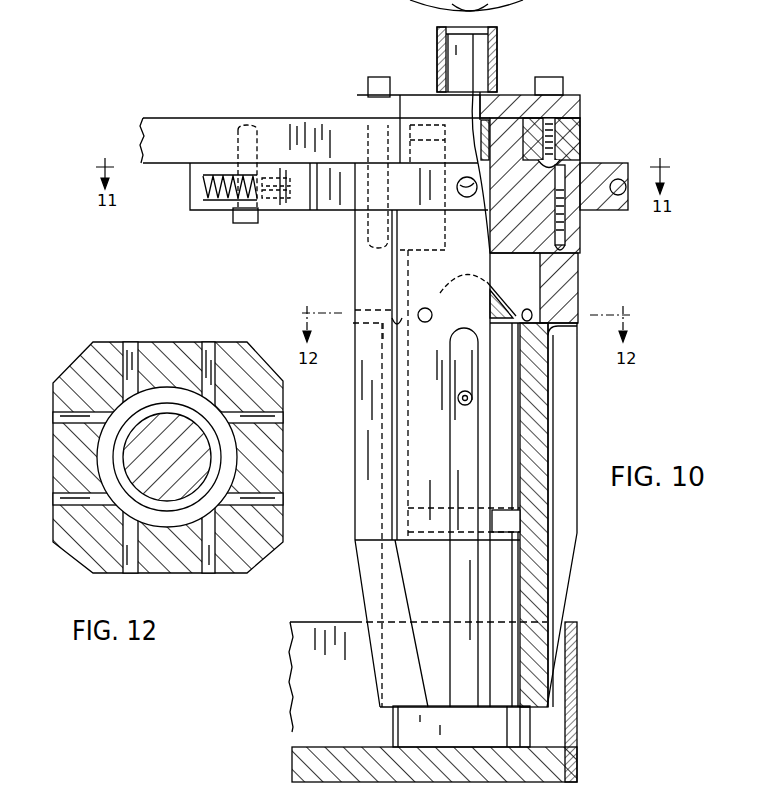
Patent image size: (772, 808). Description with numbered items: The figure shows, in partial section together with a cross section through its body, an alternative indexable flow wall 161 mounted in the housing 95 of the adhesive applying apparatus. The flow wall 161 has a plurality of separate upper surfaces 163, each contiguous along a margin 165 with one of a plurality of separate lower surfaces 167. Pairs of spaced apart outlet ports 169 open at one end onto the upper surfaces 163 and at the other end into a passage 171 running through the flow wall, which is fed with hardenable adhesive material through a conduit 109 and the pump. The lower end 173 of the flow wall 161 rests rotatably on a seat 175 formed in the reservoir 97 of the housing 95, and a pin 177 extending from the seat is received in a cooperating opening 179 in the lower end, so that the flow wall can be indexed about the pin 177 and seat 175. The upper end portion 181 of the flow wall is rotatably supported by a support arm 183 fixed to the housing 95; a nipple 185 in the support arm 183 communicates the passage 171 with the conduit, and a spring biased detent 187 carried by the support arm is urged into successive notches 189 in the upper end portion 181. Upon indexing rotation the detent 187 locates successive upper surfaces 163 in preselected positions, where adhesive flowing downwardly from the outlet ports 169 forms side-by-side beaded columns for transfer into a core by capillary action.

In FIG. 10, the housing 95 is at (300, 768).
In FIG. 10, the reservoir 97 is at (552, 724).
In FIG. 10, the flexible conduit 109 is at (499, 47).
In FIG. 10, the flow wall 161 is at (622, 105).
In FIG. 10, the upper surfaces 163 is at (358, 260).
In FIG. 10, the margin 165 is at (372, 541).
In FIG. 12, the margin 165 is at (53, 390).
In FIG. 10, the lower surfaces 167 is at (375, 589).
In FIG. 10, the outlet ports 169 is at (355, 311).
In FIG. 12, the outlet ports 169 is at (129, 343).
In FIG. 10, the passage 171 is at (507, 272).
In FIG. 12, the passage 171 is at (115, 428).
In FIG. 10, the lower end 173 is at (390, 708).
In FIG. 10, the seat 175 is at (403, 731).
In FIG. 10, the pin 177 is at (493, 693).
In FIG. 10, the opening 179 is at (512, 668).
In FIG. 10, the upper end portion 181 is at (598, 208).
In FIG. 10, the support arm 183 is at (327, 118).
In FIG. 10, the nipple 185 is at (435, 70).
In FIG. 10, the spring biased detent 187 is at (305, 195).
In FIG. 10, the notches 189 is at (456, 192).